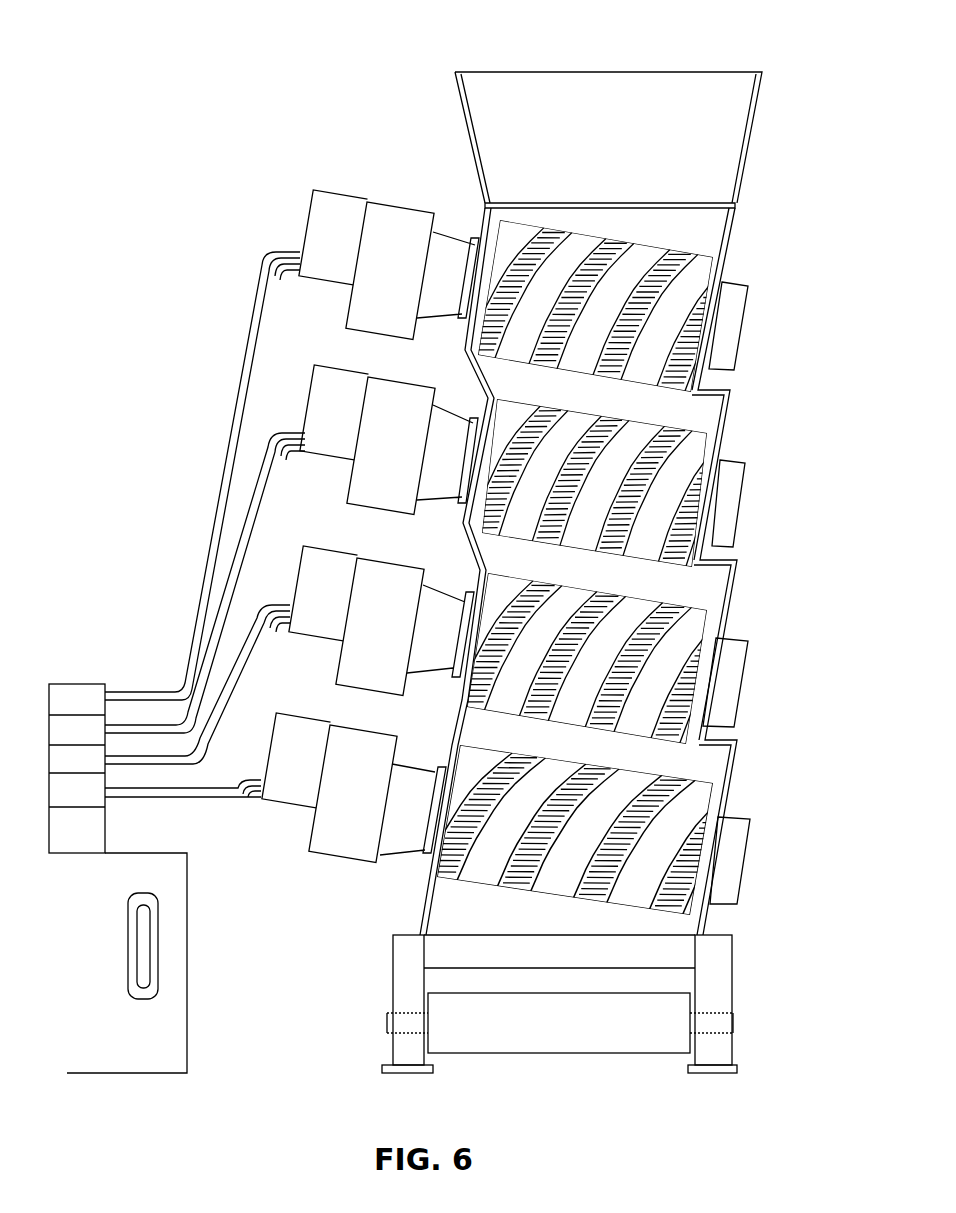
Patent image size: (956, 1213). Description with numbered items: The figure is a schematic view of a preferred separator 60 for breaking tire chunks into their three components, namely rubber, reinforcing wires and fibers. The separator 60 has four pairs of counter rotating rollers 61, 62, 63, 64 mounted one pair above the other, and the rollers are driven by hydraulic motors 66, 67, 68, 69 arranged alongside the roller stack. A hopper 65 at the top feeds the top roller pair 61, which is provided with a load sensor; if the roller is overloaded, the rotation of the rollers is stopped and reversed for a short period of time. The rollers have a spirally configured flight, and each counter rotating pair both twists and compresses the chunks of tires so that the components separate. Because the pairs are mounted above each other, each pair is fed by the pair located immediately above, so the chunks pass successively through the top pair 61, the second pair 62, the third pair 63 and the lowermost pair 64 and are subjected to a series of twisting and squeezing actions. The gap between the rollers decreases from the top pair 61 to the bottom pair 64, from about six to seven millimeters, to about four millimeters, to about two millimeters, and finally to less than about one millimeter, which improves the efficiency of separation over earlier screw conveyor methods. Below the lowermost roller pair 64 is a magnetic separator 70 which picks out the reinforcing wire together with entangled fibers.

The separator 60 is at (326, 141).
The top pair of counter rotating rollers 61 is at (712, 266).
The second pair of counter rotating rollers 62 is at (706, 444).
The third pair of counter rotating rollers 63 is at (712, 624).
The lowermost pair of counter rotating rollers 64 is at (717, 790).
The hopper 65 is at (582, 92).
The hydraulic motor 66 is at (392, 232).
The hydraulic motor 67 is at (390, 400).
The hydraulic motor 68 is at (370, 582).
The hydraulic motor 69 is at (344, 745).
The magnetic separator 70 is at (667, 1012).